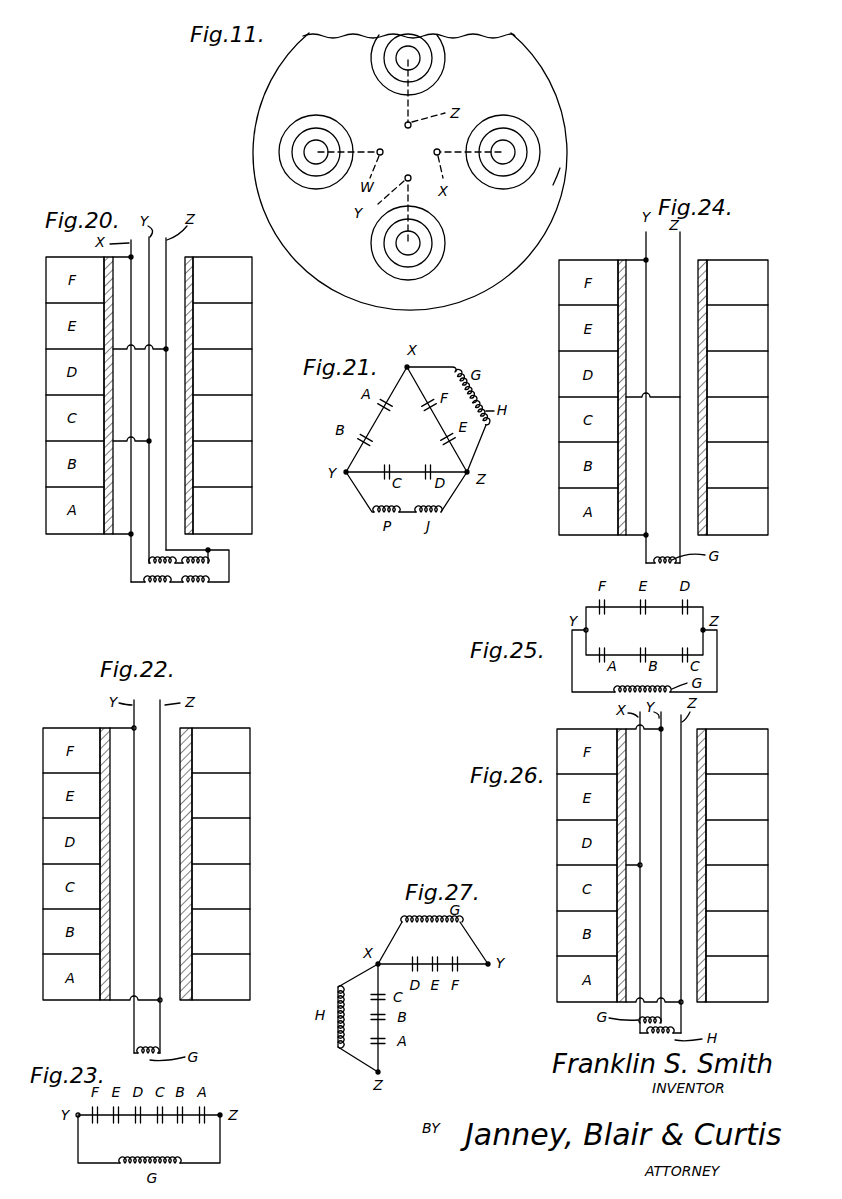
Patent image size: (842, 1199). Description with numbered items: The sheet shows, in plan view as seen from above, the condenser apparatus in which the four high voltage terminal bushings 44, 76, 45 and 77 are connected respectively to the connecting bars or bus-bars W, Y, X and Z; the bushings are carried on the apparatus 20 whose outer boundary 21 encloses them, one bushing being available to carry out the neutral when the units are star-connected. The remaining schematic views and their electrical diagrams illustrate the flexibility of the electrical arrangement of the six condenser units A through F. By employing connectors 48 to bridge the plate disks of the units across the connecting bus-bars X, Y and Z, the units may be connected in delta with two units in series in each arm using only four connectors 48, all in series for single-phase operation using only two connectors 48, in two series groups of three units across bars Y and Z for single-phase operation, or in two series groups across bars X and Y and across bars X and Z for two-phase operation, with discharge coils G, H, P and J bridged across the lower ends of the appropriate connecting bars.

In FIG. 11, the rotatable drum 20 is at (563, 216).
In FIG. 11, the drum periphery 21 is at (556, 172).
In FIG. 11, the high voltage terminal bushing 44 is at (307, 176).
In FIG. 11, the high voltage terminal bushing 45 is at (527, 138).
In FIG. 11, the high voltage terminal bushing 76 is at (434, 240).
In FIG. 11, the high voltage terminal bushing 77 is at (435, 55).
In FIG. 20, the connector 48 is at (117, 262).
In FIG. 22, the connector 48 is at (128, 727).
In FIG. 24, the connector 48 is at (640, 258).
In FIG. 26, the connector 48 is at (646, 733).